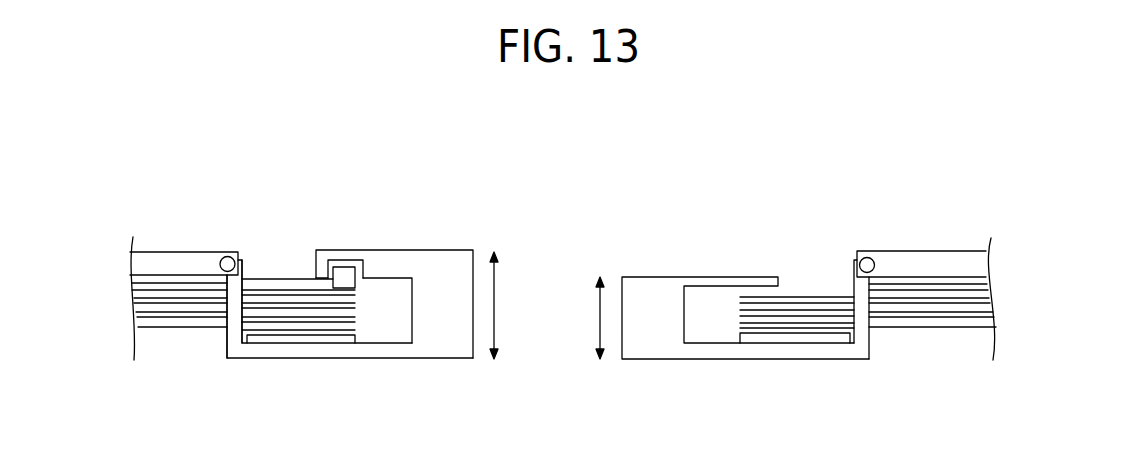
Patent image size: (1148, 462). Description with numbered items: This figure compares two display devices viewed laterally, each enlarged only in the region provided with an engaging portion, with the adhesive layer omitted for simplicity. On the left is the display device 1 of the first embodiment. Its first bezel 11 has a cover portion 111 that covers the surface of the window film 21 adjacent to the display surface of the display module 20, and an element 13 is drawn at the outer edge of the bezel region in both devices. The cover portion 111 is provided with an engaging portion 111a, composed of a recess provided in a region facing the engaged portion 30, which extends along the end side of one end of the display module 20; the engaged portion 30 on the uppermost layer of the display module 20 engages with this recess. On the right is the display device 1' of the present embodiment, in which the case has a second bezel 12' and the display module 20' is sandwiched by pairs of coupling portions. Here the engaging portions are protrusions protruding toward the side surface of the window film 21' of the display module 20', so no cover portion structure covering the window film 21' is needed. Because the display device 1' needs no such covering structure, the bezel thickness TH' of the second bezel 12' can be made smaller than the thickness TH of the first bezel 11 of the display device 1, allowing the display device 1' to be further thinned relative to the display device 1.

The display device 1 is at (328, 278).
The display device 1' is at (778, 278).
The first bezel 11 is at (421, 361).
The second bezel 12' is at (745, 361).
The display unit housing 13 is at (163, 252).
The display module 20 is at (243, 362).
The display module 20' is at (868, 364).
The window film 21 is at (291, 266).
The window film 21' is at (804, 266).
The engaged portion 30 is at (343, 275).
The cover portion 111 is at (445, 250).
The engaging portion 111a is at (365, 278).